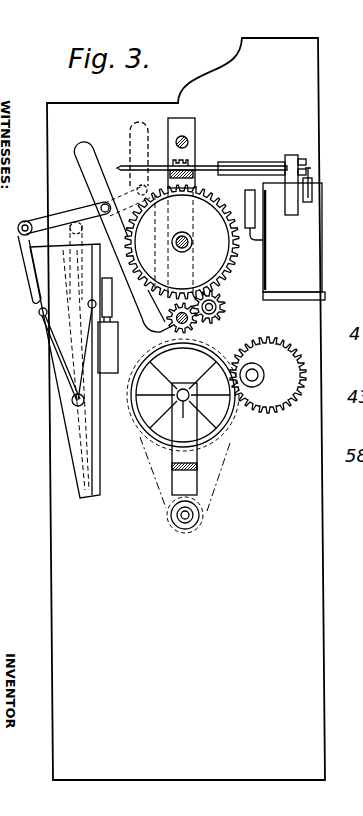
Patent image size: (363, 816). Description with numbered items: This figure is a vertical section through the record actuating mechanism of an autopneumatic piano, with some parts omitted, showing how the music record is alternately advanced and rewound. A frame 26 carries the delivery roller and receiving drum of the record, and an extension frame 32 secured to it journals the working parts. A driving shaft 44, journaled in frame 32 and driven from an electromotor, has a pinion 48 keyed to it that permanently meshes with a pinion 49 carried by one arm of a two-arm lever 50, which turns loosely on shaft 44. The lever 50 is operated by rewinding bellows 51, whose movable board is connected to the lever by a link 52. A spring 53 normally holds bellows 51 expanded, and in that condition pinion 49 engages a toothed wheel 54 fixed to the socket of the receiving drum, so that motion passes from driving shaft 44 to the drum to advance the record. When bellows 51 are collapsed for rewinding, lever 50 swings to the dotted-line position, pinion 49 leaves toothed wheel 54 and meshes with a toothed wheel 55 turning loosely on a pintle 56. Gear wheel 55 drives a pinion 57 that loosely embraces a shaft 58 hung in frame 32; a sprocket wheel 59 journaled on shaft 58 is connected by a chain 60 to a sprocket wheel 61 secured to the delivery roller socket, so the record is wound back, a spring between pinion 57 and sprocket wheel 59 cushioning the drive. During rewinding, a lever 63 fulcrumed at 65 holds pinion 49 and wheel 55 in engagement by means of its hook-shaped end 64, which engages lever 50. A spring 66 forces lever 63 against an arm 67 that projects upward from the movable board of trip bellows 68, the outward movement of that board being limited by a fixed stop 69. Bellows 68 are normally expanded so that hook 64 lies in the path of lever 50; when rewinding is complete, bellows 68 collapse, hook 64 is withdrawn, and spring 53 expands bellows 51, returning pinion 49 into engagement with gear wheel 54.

The frame 26 is at (186, 409).
The extension frame 32 is at (198, 481).
The driving shaft 44 is at (163, 330).
The pinion 48 is at (207, 344).
The pinion 49 is at (226, 302).
The two-arm lever 50 is at (96, 193).
The rewinding bellows 51 is at (60, 322).
The link 52 is at (38, 225).
The spring 53 is at (62, 374).
The toothed wheel 54 is at (232, 249).
The toothed wheel 55 is at (268, 375).
The pintle 56 is at (280, 371).
The pinion 57 is at (175, 395).
The shaft 58 is at (188, 425).
The sprocket wheel 59 is at (148, 431).
The chain 60 is at (228, 460).
The sprocket wheel 61 is at (178, 520).
The lever 63 is at (213, 166).
The hook-shaped end 64 is at (124, 166).
The fulcrum 65 is at (189, 164).
The spring 66 is at (253, 162).
The arm 67 is at (298, 156).
The trip bellows 68 is at (285, 241).
The fixed stop 69 is at (312, 192).